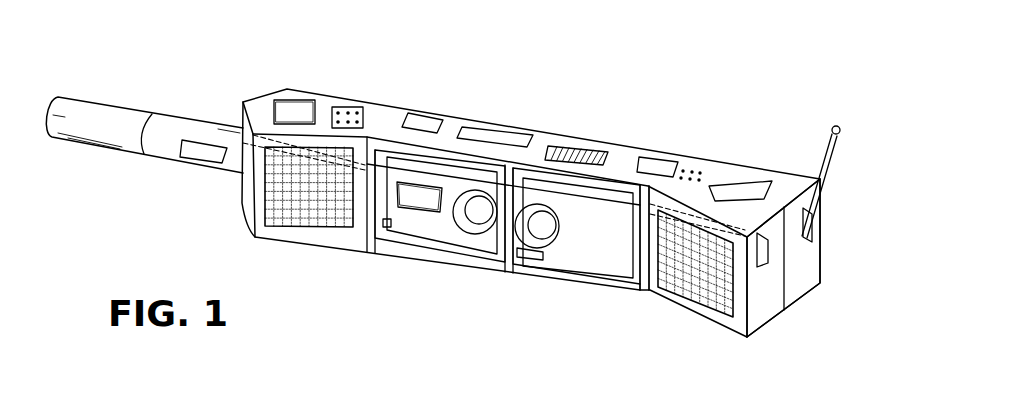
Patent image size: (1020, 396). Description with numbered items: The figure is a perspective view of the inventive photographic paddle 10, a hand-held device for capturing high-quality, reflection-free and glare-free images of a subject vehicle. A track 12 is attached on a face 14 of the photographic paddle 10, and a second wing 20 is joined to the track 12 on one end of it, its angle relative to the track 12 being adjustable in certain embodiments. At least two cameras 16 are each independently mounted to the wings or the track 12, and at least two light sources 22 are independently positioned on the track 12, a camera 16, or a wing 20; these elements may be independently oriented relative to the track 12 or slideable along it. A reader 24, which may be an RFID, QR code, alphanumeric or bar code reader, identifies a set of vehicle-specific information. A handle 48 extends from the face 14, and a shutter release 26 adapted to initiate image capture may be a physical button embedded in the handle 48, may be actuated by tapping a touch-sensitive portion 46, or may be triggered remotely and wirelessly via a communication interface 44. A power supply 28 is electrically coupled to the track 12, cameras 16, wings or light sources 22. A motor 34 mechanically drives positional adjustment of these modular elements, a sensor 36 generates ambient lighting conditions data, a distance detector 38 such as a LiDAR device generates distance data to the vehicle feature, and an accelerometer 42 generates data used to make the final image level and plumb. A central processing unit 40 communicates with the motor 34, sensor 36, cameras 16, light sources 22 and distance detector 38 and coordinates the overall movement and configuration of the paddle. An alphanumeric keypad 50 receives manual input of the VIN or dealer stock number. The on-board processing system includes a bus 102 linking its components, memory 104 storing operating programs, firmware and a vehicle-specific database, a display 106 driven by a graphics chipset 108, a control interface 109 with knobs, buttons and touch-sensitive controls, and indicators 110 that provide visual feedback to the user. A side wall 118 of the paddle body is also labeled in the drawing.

The photographic paddle 10 is at (152, 68).
The track 12 is at (395, 163).
The face 14 is at (643, 205).
The cameras 16 is at (445, 233).
The second wing 20 is at (763, 308).
The light sources 22 is at (310, 215).
The reader 24 is at (768, 248).
The shutter release 26 is at (188, 140).
The power supply 28 is at (488, 127).
The motor 34 is at (578, 147).
The sensor 36 is at (385, 219).
The distance detector 38 is at (528, 262).
The central processing unit 40 is at (655, 157).
The accelerometer 42 is at (593, 257).
The communication interface 44 is at (838, 126).
The touch-sensitive portion 46 is at (422, 113).
The handle 48 is at (75, 110).
The alphanumeric keypad 50 is at (743, 182).
The bus 102 is at (277, 100).
The memory 104 is at (287, 107).
The display 106 is at (417, 212).
The graphics chipset 108 is at (432, 182).
The control interface 109 is at (345, 107).
The indicators 110 is at (703, 163).
The side wall 118 is at (248, 190).